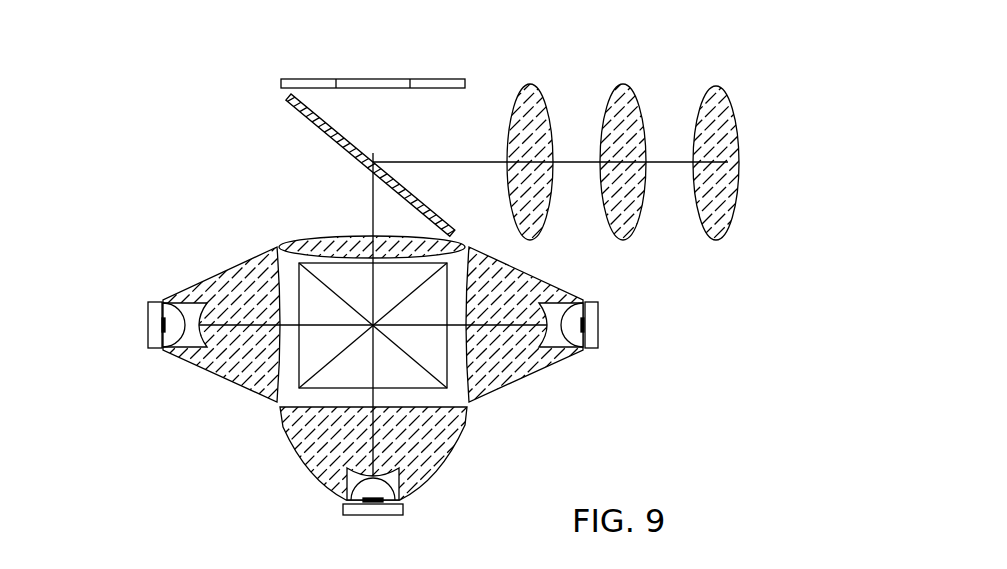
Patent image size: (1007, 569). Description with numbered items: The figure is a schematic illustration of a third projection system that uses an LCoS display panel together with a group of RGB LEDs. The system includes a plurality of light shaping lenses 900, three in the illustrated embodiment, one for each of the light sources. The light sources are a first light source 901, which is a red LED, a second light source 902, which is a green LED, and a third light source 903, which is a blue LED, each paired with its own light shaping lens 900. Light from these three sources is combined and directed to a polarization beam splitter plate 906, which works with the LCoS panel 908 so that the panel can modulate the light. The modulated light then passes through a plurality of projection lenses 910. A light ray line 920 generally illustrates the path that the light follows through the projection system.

The light shaping lens 900 is at (223, 383).
The first light source 901 is at (148, 313).
The second light source 902 is at (372, 515).
The third light source 903 is at (598, 314).
The polarization beam splitter plate 906 is at (340, 146).
The LCoS panel 908 is at (345, 78).
The projection lens 910 is at (515, 108).
The light ray line 920 is at (675, 163).